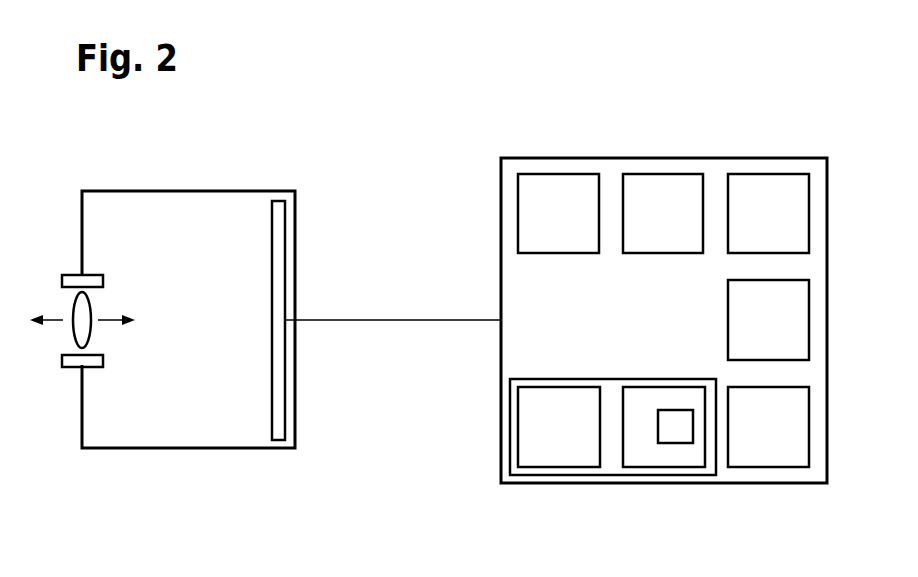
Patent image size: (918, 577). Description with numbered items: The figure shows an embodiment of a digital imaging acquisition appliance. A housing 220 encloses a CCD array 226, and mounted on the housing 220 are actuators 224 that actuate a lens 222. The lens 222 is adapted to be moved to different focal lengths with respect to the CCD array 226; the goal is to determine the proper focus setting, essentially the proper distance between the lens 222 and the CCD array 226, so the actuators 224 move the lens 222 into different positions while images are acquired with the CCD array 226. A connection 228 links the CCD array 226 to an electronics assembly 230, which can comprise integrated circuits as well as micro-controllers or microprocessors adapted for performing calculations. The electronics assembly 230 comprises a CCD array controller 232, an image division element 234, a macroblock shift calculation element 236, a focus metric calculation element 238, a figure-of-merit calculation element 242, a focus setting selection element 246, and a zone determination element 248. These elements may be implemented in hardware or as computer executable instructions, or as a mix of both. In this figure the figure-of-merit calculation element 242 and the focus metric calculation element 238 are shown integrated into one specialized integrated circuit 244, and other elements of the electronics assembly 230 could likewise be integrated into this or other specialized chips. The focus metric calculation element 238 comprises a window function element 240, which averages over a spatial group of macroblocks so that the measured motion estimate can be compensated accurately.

The housing 220 is at (190, 190).
The lens 222 is at (91, 312).
The actuators 224 is at (74, 274).
The CCD array 226 is at (286, 375).
The connection 228 is at (390, 318).
The electronics assembly 230 is at (500, 438).
The CCD array controller 232 is at (560, 173).
The image division element 234 is at (664, 173).
The macroblock shift calculation element 236 is at (768, 173).
The focus metric calculation element 238 is at (645, 468).
The window function element 240 is at (683, 444).
The figure-of-merit calculation element 242 is at (562, 468).
The specialized integrated circuit 244 is at (577, 378).
The focus setting selection element 246 is at (768, 468).
The zone determination element 248 is at (727, 320).